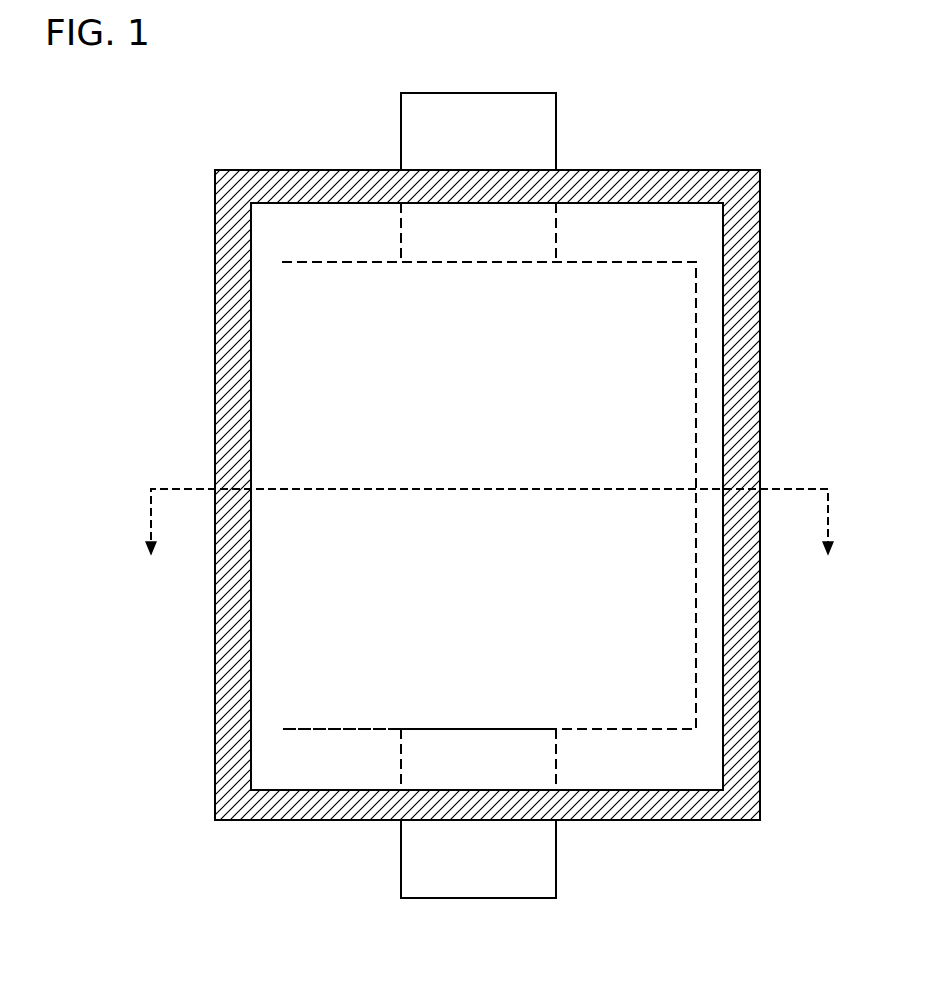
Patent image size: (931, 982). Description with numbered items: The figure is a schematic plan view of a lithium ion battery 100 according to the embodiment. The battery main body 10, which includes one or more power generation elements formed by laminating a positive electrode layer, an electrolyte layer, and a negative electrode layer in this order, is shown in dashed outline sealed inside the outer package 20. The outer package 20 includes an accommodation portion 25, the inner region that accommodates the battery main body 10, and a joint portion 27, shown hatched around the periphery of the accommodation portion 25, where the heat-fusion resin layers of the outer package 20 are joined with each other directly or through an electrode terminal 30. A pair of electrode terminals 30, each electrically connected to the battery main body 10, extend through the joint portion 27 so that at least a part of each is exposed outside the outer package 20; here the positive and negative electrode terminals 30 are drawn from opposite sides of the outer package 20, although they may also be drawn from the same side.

The lithium ion battery 100 is at (773, 941).
The battery main body 10 is at (282, 384).
The outer package 20 is at (215, 752).
The accommodation portion 25 is at (640, 235).
The joint portion 27 is at (740, 394).
The electrode terminal 30 is at (401, 115).